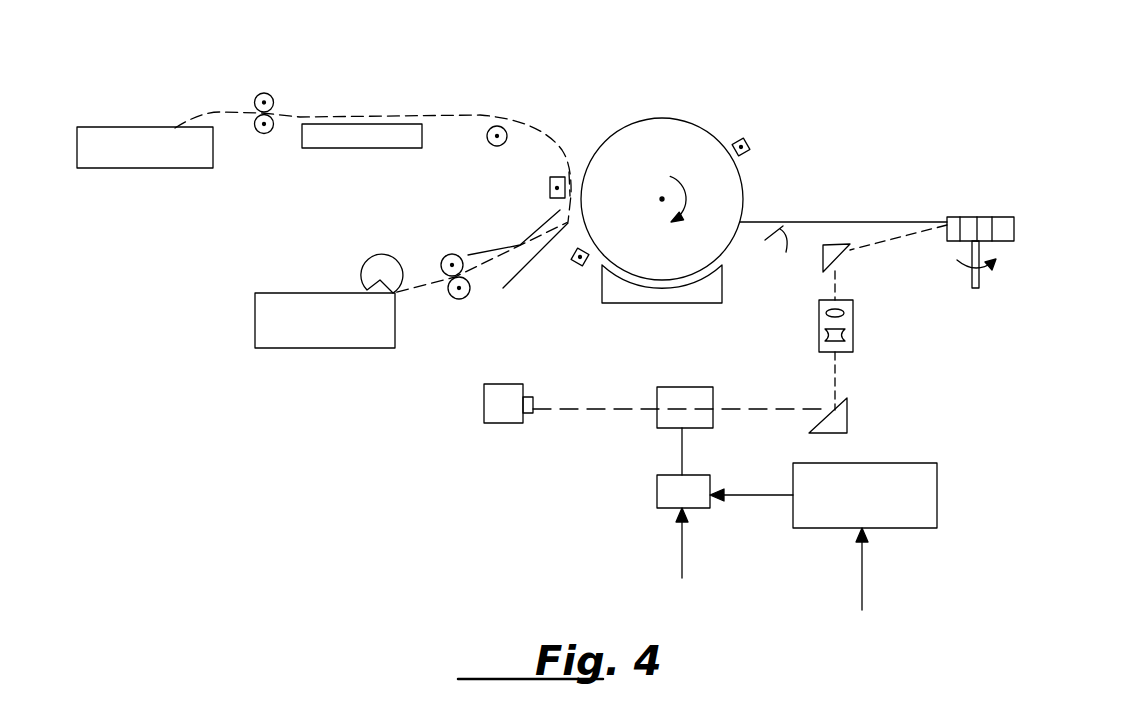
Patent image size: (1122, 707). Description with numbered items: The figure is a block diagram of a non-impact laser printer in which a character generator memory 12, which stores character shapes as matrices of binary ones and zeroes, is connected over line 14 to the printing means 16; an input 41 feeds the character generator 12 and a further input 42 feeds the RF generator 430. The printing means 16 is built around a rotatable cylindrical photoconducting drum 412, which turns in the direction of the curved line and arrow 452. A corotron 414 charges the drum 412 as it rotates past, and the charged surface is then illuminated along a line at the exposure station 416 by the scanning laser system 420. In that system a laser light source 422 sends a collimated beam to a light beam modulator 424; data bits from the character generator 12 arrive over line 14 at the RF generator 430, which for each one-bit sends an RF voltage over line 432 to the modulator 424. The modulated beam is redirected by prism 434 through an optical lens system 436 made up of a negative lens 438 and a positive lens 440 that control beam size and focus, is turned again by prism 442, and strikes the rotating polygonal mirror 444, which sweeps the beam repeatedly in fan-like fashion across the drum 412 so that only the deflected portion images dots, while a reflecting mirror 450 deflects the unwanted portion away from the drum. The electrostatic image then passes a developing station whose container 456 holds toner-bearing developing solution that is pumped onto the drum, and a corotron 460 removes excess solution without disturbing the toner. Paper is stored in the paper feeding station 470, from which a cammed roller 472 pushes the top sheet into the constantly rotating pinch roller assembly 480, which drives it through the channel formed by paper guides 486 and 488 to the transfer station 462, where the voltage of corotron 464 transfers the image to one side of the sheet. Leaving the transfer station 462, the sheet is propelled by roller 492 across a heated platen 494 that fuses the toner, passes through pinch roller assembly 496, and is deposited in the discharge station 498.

The printing means 16 is at (780, 98).
The photoconducting drum 412 is at (672, 118).
The curved line and arrow 452 is at (686, 190).
The corotron 414 is at (753, 142).
The exposure station 416 is at (760, 222).
The reflecting mirror 450 is at (770, 253).
The rotating polygonal mirror 444 is at (1014, 232).
The prism 442 is at (823, 262).
The optical lens system 436 is at (853, 343).
The positive lens 440 is at (845, 313).
The negative lens 438 is at (823, 335).
The prism 434 is at (848, 417).
The scanning laser system 420 is at (955, 329).
The light beam modulator 424 is at (675, 395).
The laser light source 422 is at (497, 401).
The line 432 is at (682, 448).
The RF generator 430 is at (663, 493).
The clock signal input 42 is at (682, 550).
The line 14 is at (758, 495).
The character generator memory 12 is at (928, 513).
The data input 41 is at (862, 580).
The container 456 is at (623, 298).
The corotron 460 is at (572, 265).
The transfer station 462 is at (565, 173).
The corotron 464 is at (550, 188).
The paper guide 486 is at (500, 245).
The paper guide 488 is at (503, 287).
The pinch roller assembly 480 is at (455, 294).
The paper feeding station 470 is at (270, 320).
The cammed roller 472 is at (365, 268).
The roller 492 is at (488, 143).
The heated platen 494 is at (337, 139).
The pinch roller assembly 496 is at (270, 95).
The discharge station 498 is at (170, 162).